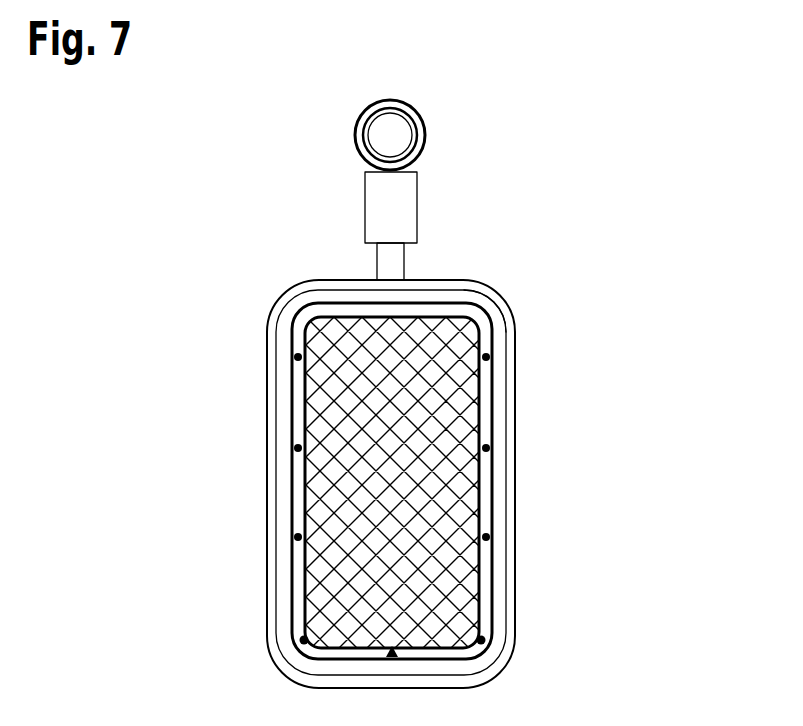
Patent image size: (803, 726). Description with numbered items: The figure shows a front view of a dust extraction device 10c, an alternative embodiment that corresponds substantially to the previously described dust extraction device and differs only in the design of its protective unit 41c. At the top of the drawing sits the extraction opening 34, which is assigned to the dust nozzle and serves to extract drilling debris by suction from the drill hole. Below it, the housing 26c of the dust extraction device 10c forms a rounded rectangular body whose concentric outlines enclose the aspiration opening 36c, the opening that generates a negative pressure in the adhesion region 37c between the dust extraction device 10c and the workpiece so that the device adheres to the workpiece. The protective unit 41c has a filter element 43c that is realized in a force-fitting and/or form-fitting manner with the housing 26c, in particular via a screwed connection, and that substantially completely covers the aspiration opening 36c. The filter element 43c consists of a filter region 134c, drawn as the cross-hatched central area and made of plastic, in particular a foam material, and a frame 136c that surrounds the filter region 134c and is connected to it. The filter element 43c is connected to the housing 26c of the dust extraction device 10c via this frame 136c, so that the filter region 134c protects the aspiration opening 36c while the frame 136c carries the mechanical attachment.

The dust extraction device 10c is at (401, 393).
The housing 26c is at (522, 620).
The extraction opening 34 is at (403, 142).
The aspiration opening 36c is at (293, 410).
The adhesion region 37c is at (297, 331).
The protective unit 41c is at (496, 319).
The filter element 43c is at (470, 531).
The filter region 134c is at (453, 430).
The frame 136c is at (484, 392).